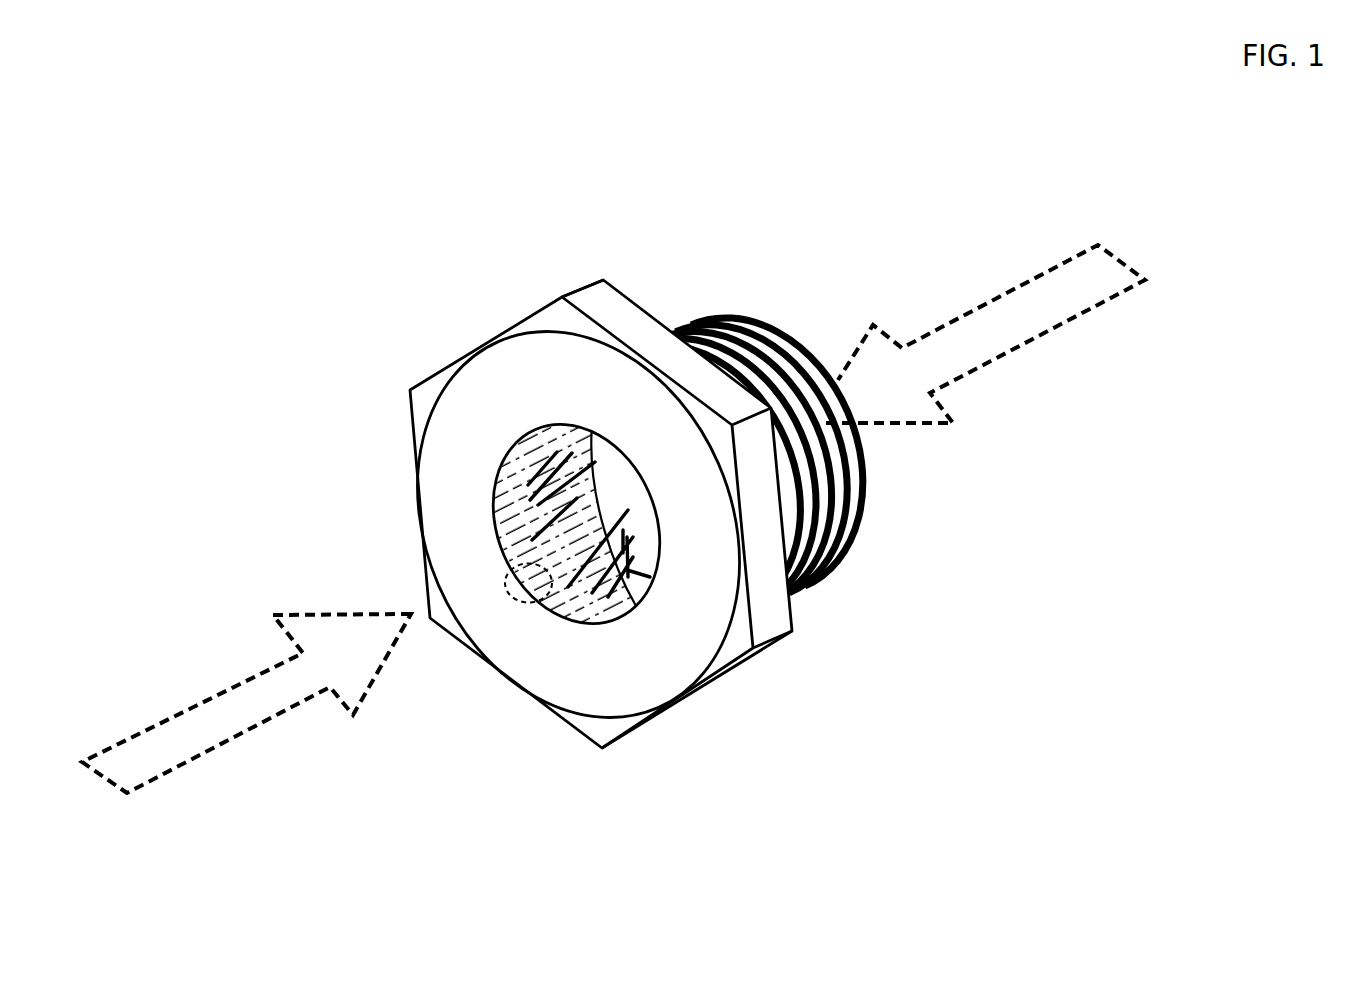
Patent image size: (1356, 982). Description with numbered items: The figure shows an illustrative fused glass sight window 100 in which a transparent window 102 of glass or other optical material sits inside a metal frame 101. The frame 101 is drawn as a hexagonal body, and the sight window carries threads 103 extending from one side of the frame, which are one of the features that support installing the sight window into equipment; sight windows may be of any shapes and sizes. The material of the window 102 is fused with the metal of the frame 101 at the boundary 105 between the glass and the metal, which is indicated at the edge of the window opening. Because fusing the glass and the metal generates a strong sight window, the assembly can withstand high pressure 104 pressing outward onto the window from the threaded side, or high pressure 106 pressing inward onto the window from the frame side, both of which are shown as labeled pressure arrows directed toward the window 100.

The fused glass sight window 100 is at (650, 444).
The metal frame 101 is at (482, 403).
The transparent window 102 is at (622, 533).
The threads 103 is at (827, 573).
The high pressure 104 is at (988, 357).
The boundary 105 is at (505, 592).
The high pressure 106 is at (256, 722).